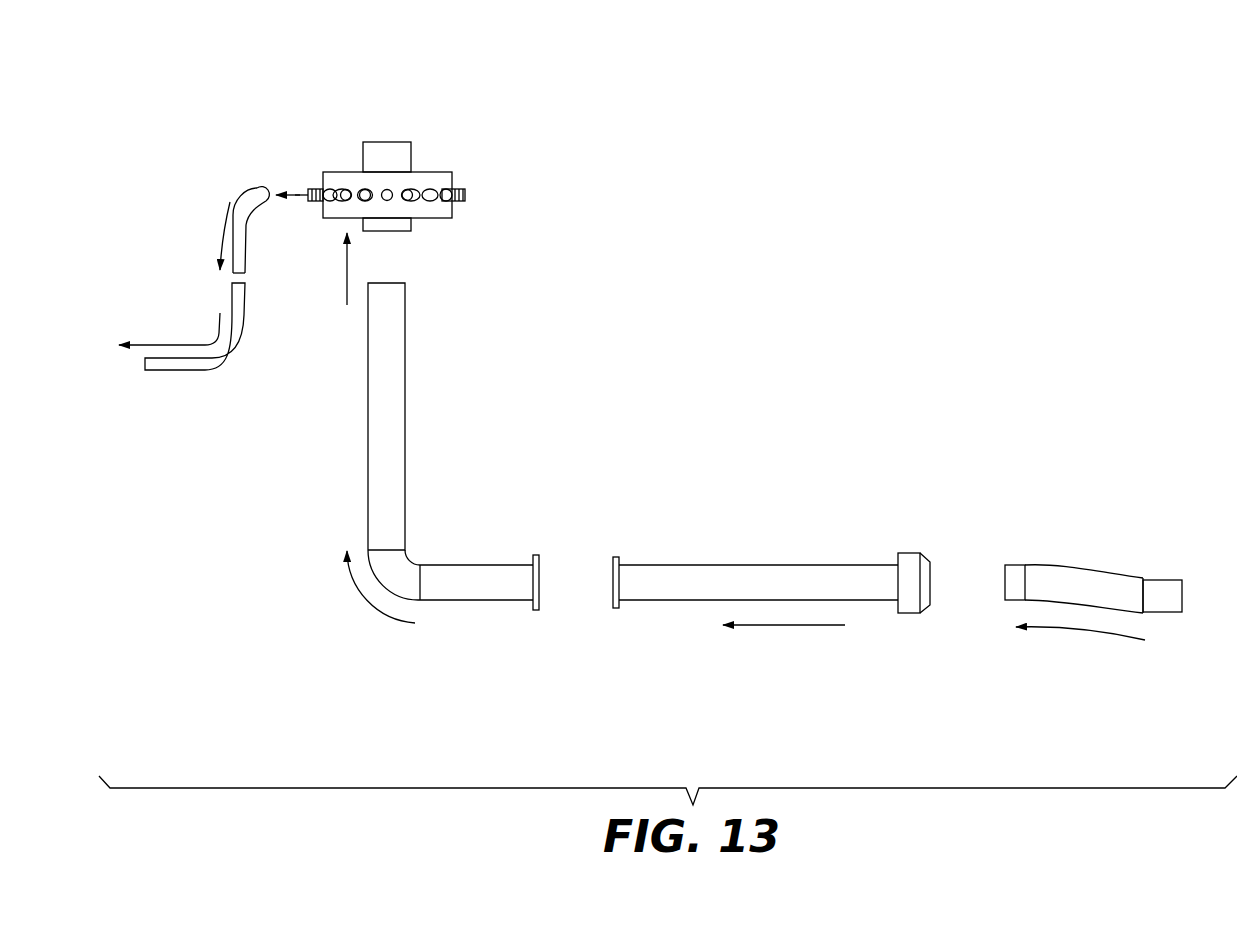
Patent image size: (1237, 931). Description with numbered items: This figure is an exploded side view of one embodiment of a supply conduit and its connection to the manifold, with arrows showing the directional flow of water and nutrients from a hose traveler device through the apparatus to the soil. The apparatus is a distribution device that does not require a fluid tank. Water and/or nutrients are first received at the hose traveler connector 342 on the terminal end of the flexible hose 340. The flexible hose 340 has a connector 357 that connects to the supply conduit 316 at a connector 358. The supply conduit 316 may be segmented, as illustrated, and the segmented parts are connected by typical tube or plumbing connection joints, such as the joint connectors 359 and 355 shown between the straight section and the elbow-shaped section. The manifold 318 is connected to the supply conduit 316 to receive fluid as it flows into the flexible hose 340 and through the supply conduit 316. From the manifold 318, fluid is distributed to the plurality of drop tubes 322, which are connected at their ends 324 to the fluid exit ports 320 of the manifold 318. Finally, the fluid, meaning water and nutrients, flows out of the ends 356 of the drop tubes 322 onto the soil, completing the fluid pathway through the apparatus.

The supply conduit 316 is at (400, 415).
The manifold 318 is at (447, 122).
The fluid exit ports 320 is at (466, 195).
The drop tubes 322 is at (243, 240).
The ends 324 is at (257, 178).
The flexible hose 340 is at (1085, 578).
The hose traveler connector 342 is at (1162, 585).
The joint connector 355 is at (536, 553).
The ends 356 is at (155, 376).
The connector 357 is at (1013, 572).
The connector 358 is at (910, 560).
The joint connector 359 is at (617, 555).